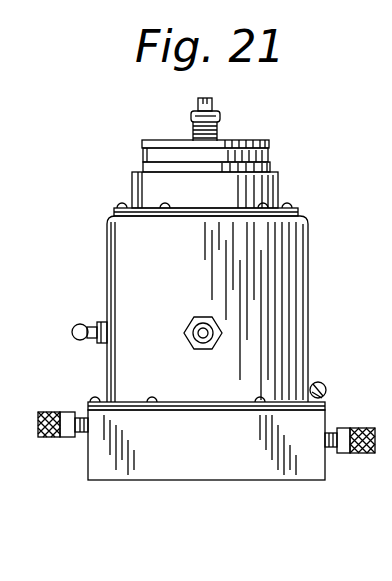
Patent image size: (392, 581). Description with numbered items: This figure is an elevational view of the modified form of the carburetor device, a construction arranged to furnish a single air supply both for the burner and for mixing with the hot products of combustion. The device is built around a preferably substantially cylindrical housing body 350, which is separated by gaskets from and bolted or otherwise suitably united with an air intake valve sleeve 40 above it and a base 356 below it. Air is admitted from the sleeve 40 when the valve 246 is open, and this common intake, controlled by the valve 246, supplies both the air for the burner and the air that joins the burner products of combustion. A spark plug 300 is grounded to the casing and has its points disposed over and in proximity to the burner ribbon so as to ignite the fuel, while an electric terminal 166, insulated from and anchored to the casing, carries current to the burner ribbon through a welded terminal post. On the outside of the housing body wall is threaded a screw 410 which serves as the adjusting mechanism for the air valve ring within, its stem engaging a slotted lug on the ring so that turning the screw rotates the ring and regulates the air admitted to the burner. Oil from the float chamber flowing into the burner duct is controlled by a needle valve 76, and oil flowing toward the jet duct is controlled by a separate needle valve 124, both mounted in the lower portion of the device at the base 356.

The valve 246 is at (222, 114).
The air intake valve sleeve 40 is at (290, 189).
The housing body 350 is at (316, 258).
The spark plug 300 is at (200, 316).
The electric terminal 166 is at (80, 323).
The screw 410 is at (327, 386).
The base 356 is at (156, 490).
The needle valve 124 is at (55, 412).
The needle valve 76 is at (358, 455).